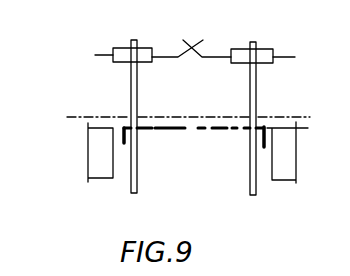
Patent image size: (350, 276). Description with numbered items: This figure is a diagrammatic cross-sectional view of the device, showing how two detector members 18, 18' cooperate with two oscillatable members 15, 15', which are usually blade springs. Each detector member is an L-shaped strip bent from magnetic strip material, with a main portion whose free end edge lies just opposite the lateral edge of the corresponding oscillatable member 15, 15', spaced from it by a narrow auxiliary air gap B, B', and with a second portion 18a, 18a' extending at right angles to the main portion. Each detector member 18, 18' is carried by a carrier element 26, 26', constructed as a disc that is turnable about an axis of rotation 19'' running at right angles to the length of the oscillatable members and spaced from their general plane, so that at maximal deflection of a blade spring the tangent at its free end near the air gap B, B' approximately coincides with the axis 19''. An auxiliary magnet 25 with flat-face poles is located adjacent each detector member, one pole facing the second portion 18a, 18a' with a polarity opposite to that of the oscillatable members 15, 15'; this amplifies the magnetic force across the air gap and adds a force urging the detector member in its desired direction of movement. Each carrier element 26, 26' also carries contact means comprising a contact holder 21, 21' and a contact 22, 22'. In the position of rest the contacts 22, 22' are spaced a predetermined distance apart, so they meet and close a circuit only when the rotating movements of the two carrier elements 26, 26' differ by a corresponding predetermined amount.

The oscillatable member 15 is at (161, 144).
The oscillatable member 15' is at (221, 144).
The detector member 18 is at (113, 111).
The detector member 18' is at (276, 109).
The second portion 18a is at (83, 139).
The second portion 18a' is at (304, 134).
The axis of rotation 19'' is at (188, 96).
The contact holder 21 is at (121, 39).
The contact holder 21' is at (265, 40).
The contact 22 is at (190, 37).
The contact 22' is at (189, 37).
The auxiliary magnet 25 is at (95, 162).
The carrier element 26 is at (110, 130).
The carrier element 26' is at (264, 132).
The auxiliary air gap B is at (159, 114).
The auxiliary air gap B' is at (229, 114).